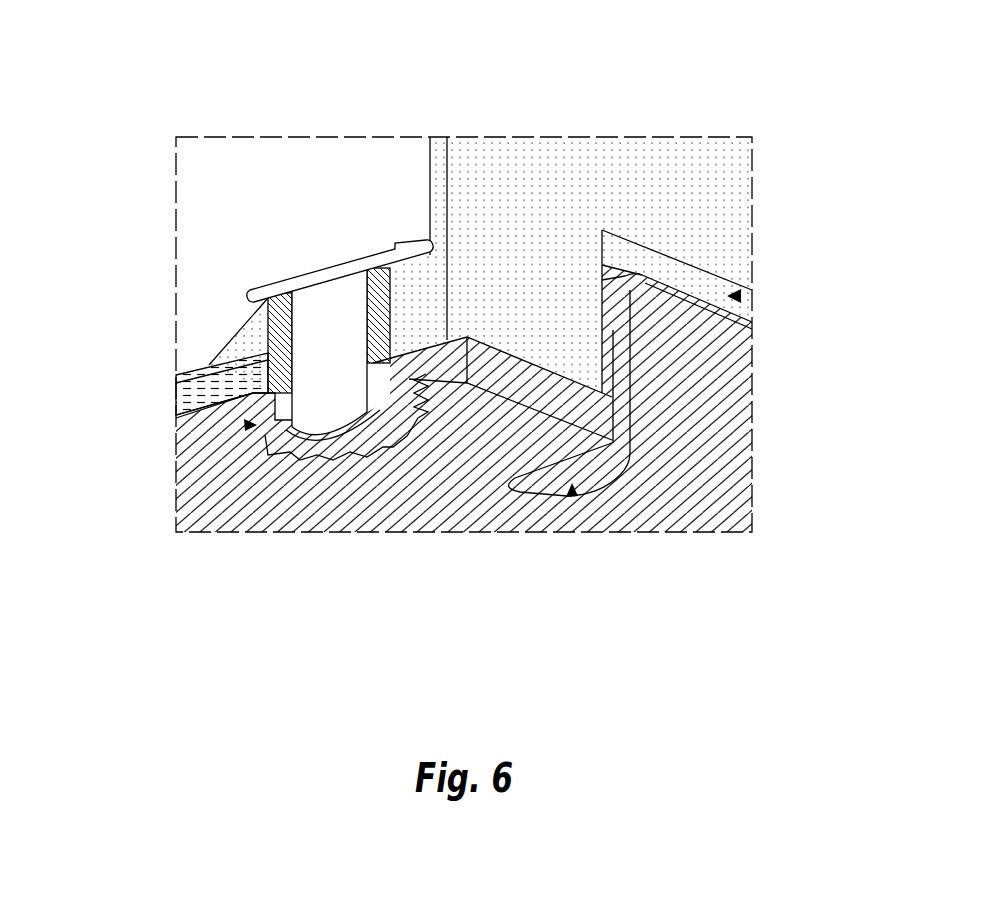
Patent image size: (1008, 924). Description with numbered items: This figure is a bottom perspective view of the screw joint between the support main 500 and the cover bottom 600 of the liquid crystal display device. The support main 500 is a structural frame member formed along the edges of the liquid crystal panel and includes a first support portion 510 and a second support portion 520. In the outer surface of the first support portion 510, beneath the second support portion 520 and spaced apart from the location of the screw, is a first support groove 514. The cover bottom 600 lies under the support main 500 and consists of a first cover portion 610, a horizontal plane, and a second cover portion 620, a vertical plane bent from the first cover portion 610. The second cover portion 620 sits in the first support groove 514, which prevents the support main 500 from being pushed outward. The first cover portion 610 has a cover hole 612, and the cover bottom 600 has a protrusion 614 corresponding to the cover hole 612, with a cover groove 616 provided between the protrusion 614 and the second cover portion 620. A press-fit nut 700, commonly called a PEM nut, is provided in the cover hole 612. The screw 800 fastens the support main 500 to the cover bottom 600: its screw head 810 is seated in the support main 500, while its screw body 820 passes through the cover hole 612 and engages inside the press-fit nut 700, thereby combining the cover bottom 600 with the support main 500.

The support main 500 is at (545, 222).
The first support portion 510 is at (410, 282).
The first support groove 514 is at (736, 296).
The second support portion 520 is at (493, 162).
The cover bottom 600 is at (456, 496).
The first cover portion 610 is at (481, 500).
The cover hole 612 is at (250, 425).
The protrusion 614 is at (567, 393).
The cover groove 616 is at (572, 490).
The second cover portion 620 is at (683, 413).
The press-fit nut 700 is at (262, 345).
The screw 800 is at (334, 225).
The screw head 810 is at (257, 293).
The screw body 820 is at (320, 355).